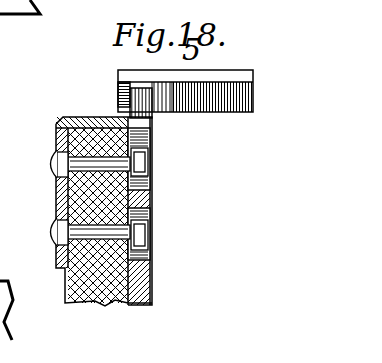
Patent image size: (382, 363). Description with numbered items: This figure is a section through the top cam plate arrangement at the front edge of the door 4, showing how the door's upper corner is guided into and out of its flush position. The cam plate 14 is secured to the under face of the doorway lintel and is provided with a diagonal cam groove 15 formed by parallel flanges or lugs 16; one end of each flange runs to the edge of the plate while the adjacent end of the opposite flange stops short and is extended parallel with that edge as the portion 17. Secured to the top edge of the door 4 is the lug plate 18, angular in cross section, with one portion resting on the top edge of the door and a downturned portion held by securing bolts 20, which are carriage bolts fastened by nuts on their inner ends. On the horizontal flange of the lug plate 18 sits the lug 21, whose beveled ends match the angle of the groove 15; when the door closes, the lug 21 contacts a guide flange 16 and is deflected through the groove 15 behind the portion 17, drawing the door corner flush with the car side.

The door 4 is at (125, 282).
The cam plate 14 is at (238, 78).
The diagonal cam groove 15 is at (115, 88).
The guide flange 16 is at (238, 113).
The extended portion of guide flange 17 is at (182, 102).
The lug plate 18 is at (58, 190).
The securing bolt 20 is at (152, 160).
The lug 21 is at (150, 108).